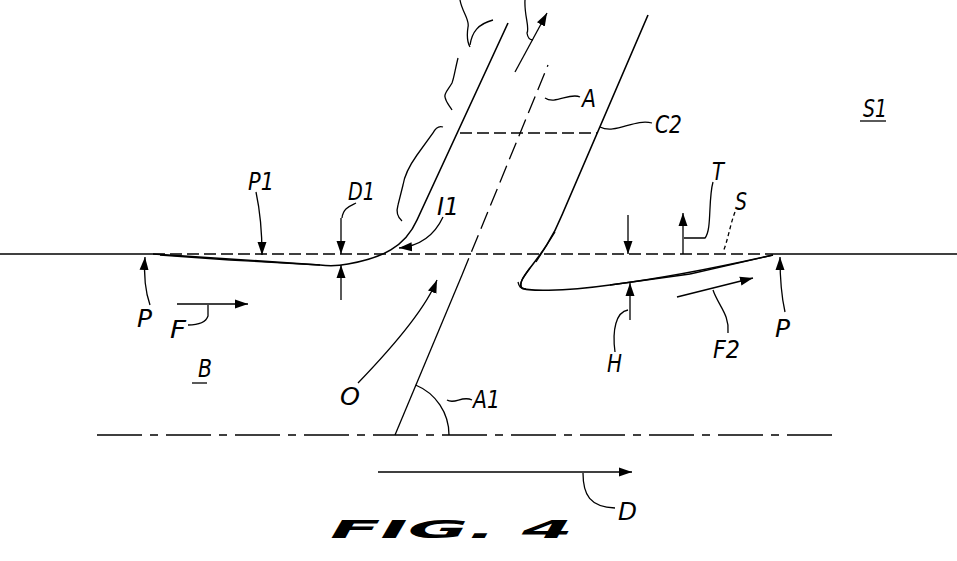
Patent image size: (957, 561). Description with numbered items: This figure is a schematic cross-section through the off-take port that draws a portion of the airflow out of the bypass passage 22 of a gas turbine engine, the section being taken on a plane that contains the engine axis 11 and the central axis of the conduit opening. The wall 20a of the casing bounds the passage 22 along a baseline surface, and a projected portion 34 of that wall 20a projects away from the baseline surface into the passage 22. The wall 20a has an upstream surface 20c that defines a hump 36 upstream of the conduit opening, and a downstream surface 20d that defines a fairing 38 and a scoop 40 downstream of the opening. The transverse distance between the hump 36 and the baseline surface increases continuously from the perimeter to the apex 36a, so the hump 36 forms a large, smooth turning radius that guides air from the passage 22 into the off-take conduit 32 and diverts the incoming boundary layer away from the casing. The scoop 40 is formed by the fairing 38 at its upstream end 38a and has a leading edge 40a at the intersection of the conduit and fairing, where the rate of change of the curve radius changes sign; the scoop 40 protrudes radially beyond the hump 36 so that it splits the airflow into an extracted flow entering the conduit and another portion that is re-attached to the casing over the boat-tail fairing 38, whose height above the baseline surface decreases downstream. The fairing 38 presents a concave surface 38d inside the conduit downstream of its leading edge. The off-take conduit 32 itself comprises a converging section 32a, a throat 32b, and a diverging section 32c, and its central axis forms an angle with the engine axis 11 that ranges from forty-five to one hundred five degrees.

The axis 11 is at (768, 436).
The wall 20a is at (43, 256).
The upstream surface 20c is at (288, 284).
The downstream surface 20d is at (678, 308).
The bypass passage 22 is at (903, 412).
The off-take conduit 32 is at (628, 62).
The converging section 32a is at (407, 168).
The throat 32b is at (567, 135).
The diverging section 32c is at (490, 62).
The projected portion 34 is at (650, 283).
The hump 36 is at (317, 254).
The apex 36a is at (351, 268).
The fairing 38 is at (588, 268).
The upstream end 38a is at (518, 287).
The concave surface 38d is at (542, 236).
The scoop 40 is at (534, 312).
The leading edge 40a is at (537, 277).